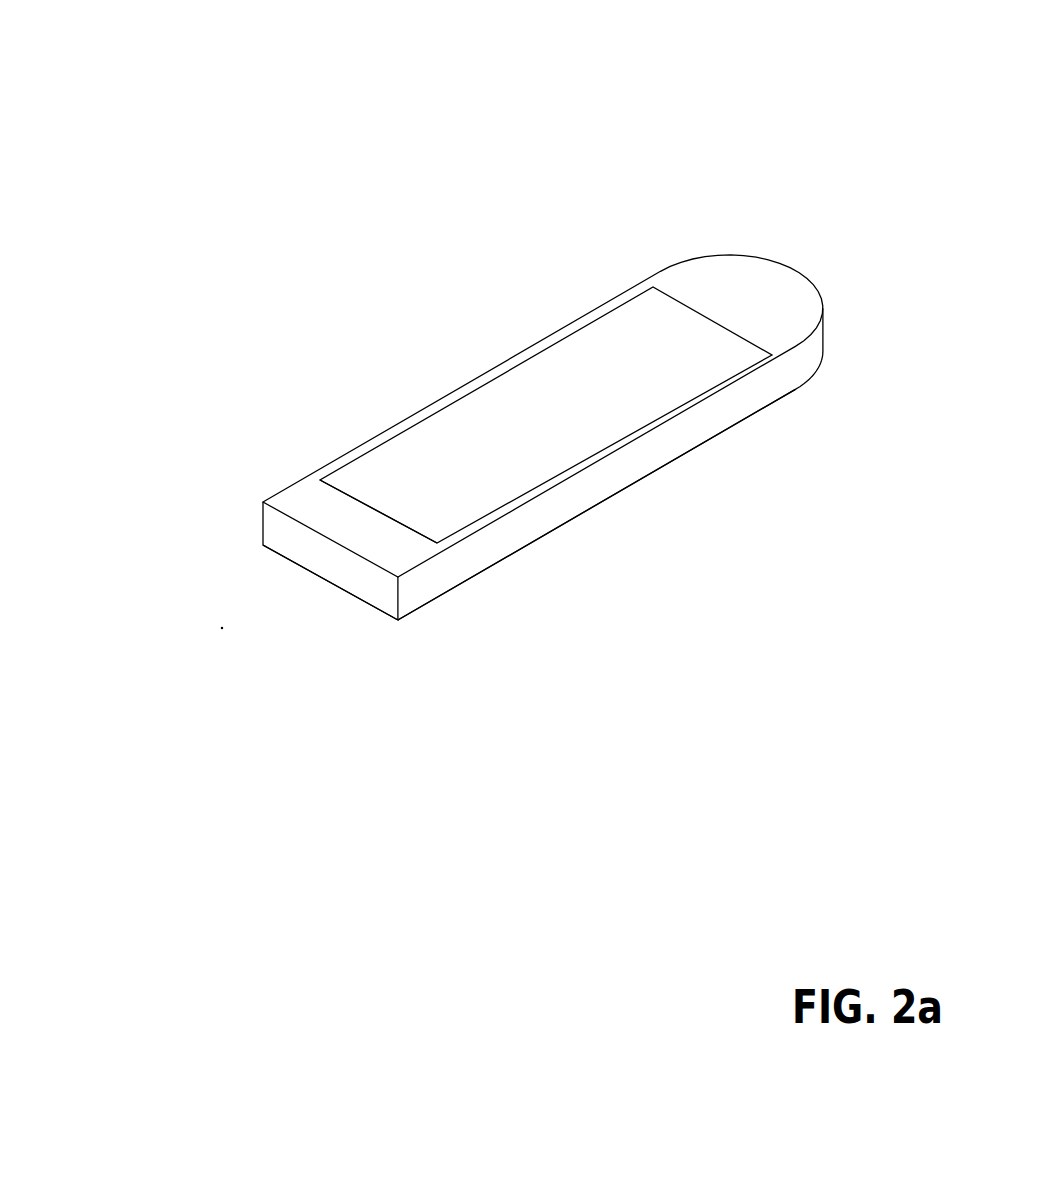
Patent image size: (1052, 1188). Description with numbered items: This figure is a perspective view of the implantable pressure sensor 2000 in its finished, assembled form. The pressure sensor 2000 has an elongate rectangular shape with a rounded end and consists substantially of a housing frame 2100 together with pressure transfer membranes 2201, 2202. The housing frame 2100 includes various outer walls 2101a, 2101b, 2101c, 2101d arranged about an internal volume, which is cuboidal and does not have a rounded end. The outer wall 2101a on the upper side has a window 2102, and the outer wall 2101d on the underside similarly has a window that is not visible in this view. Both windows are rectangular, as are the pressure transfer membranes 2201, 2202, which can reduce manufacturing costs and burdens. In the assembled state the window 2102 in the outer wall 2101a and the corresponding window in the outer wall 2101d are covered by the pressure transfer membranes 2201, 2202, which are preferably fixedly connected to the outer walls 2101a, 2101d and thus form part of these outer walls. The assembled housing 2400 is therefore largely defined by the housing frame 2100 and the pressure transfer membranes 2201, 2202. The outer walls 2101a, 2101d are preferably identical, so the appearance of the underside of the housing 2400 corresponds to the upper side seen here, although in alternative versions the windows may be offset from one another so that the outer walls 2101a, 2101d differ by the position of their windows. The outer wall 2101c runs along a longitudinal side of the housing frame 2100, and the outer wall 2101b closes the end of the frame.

The implantable pressure sensor 2000 is at (175, 193).
The housing frame 2100 is at (478, 558).
The outer wall 2101a is at (305, 500).
The outer wall 2101b is at (283, 540).
The outer wall 2101c is at (697, 425).
The outer wall 2101d is at (293, 570).
The window 2102 is at (373, 513).
The pressure transfer membrane 2201 is at (475, 405).
The pressure transfer membrane 2202 is at (550, 535).
The assembled housing 2400 is at (222, 628).